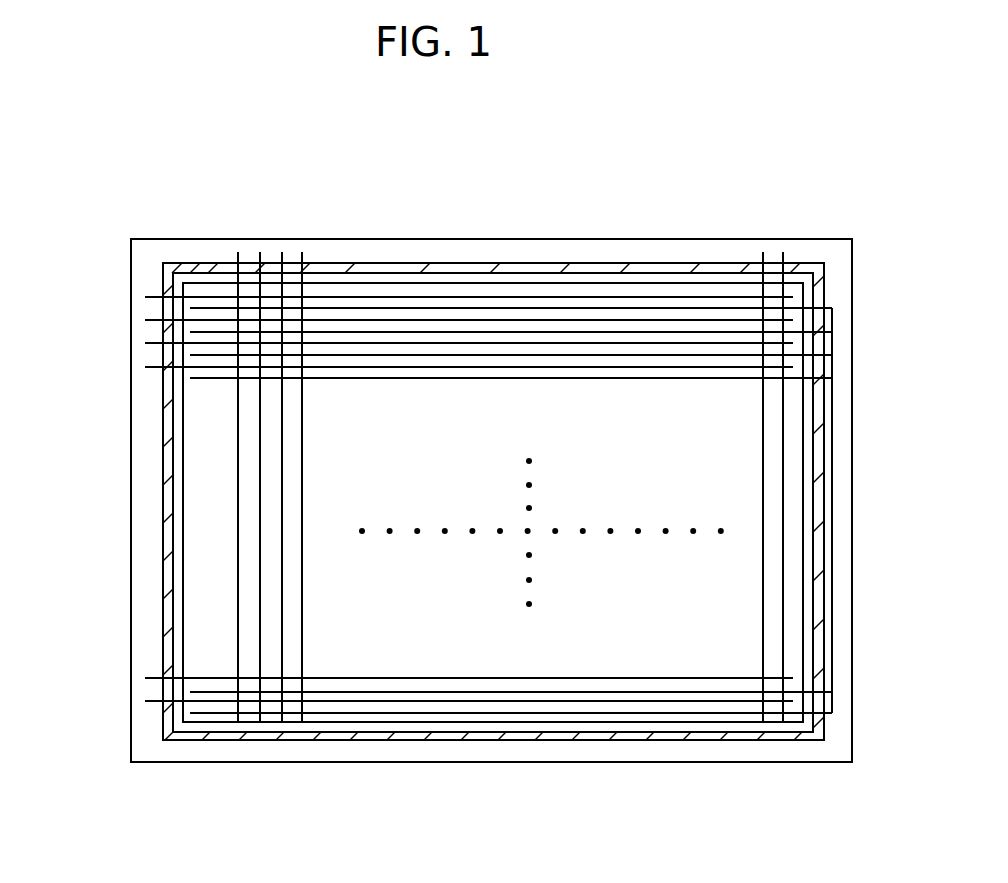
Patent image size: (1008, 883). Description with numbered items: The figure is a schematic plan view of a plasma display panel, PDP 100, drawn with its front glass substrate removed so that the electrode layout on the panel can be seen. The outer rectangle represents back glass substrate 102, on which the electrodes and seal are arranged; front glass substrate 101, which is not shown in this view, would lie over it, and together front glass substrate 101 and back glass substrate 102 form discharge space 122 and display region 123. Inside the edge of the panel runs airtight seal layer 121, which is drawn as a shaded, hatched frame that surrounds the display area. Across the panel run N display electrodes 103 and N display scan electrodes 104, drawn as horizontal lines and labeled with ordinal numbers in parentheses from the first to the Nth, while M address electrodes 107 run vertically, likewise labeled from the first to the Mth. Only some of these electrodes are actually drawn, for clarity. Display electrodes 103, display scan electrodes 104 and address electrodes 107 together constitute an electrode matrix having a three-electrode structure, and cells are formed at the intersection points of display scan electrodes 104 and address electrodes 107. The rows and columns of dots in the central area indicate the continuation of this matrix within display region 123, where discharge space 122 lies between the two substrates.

The PDP 100 is at (518, 467).
The front glass substrate 101 is at (815, 238).
The back glass substrate 102 is at (518, 467).
The display electrodes 103 is at (202, 377).
The display scan electrodes 104 is at (145, 297).
The address electrodes 107 is at (239, 256).
The airtight seal layer 121 is at (481, 267).
The discharge space 122 is at (583, 408).
The display region 123 is at (182, 517).